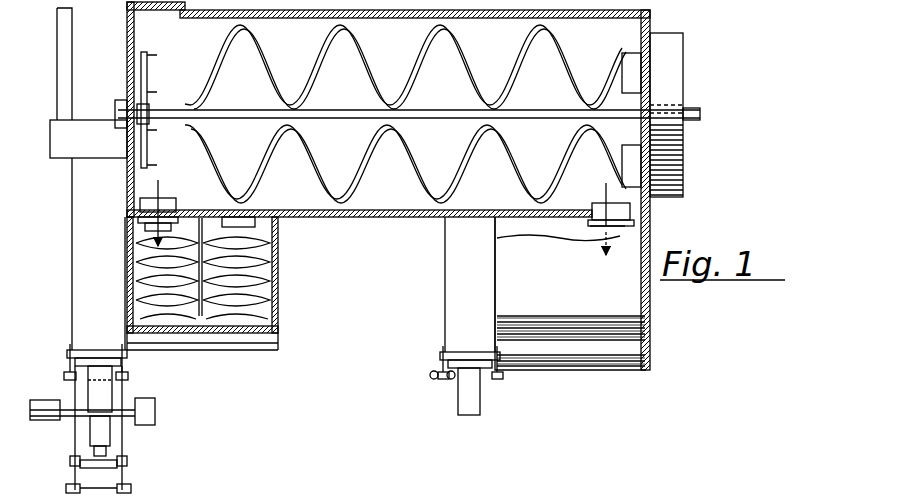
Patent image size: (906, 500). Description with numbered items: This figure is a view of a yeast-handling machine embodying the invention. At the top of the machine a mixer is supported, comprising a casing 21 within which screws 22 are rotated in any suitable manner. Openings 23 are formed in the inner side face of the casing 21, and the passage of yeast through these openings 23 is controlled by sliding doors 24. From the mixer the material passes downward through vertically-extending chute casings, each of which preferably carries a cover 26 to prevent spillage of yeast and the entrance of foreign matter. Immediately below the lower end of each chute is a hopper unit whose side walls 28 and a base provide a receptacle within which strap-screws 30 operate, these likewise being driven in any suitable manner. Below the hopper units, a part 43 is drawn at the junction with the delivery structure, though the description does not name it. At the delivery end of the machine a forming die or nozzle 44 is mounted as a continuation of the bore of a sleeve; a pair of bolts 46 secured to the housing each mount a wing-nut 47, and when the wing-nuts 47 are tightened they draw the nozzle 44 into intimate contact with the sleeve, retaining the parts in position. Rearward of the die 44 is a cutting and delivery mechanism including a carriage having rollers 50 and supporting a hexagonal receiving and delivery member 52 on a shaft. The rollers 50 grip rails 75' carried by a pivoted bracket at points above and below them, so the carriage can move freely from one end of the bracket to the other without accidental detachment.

The casing 21 is at (357, 212).
The screws 22 is at (430, 34).
The openings 23 is at (172, 210).
The sliding doors 24 is at (182, 212).
The cover 26 is at (543, 358).
The side walls 28 is at (74, 282).
The strap-screws 30 is at (266, 298).
The flange 43 is at (98, 350).
The forming die or nozzle 44 is at (104, 386).
The bolts 46 is at (66, 355).
The wing-nut 47 is at (438, 373).
The rollers 50 is at (70, 465).
The receiving and delivery member 52 is at (104, 433).
The rails 75' is at (98, 482).